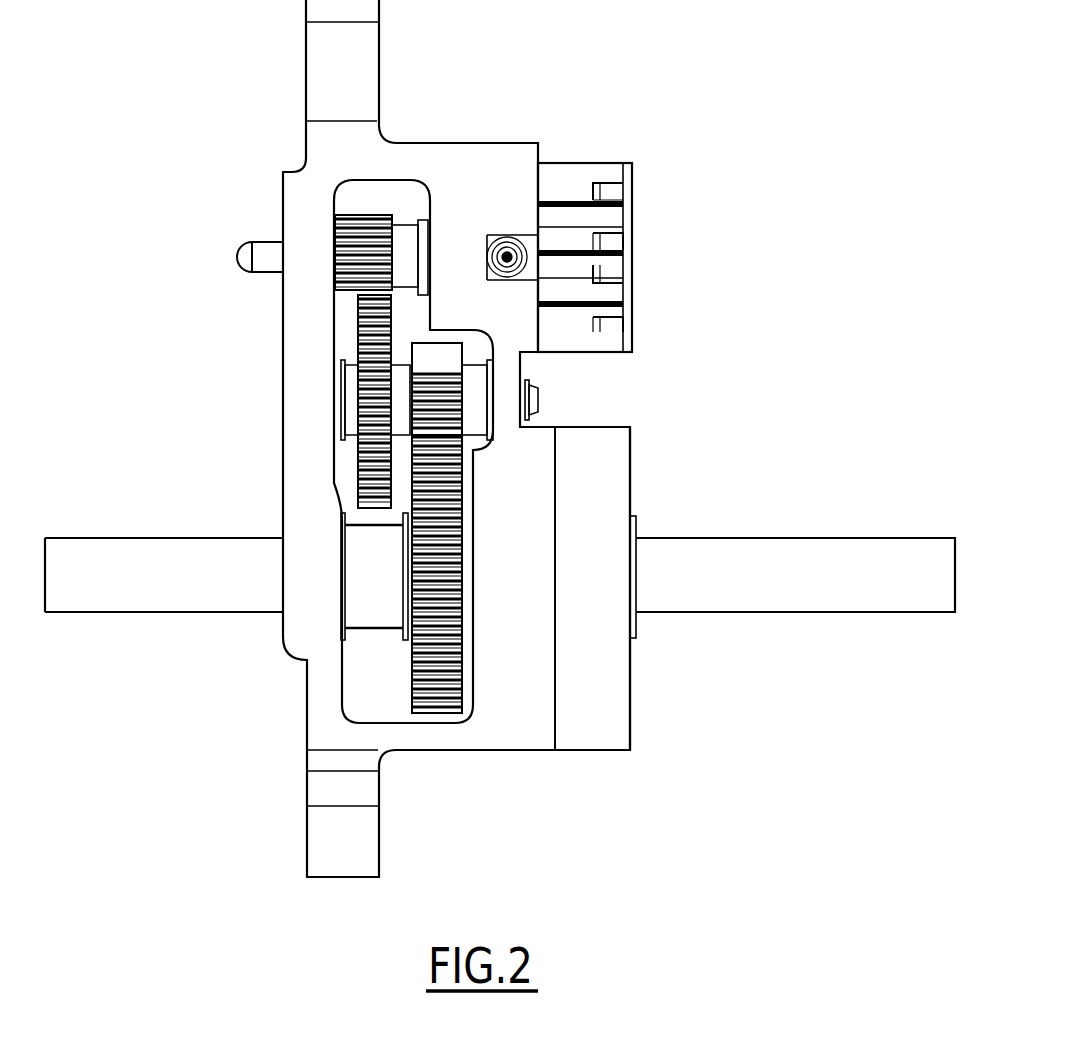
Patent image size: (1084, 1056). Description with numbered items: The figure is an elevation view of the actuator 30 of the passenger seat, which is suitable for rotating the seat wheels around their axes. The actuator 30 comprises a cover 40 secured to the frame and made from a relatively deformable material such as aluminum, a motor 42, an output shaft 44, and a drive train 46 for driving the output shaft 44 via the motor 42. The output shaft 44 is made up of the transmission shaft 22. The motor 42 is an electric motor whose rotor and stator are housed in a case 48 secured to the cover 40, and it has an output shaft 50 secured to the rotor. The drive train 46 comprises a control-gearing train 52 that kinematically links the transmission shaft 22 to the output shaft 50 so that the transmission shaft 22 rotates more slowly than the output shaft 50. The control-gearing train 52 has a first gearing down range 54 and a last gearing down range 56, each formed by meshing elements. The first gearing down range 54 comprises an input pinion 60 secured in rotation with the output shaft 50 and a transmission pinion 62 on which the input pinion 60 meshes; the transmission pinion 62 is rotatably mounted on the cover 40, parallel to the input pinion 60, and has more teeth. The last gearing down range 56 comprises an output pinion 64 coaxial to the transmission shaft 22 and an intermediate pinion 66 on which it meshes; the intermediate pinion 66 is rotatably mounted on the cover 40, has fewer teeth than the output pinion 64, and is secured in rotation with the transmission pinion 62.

The transmission shaft 22 is at (500, 556).
The actuator 30 is at (764, 224).
The cover 40 is at (600, 478).
The motor 42 is at (576, 157).
The output shaft 44 is at (812, 548).
The drive train 46 is at (380, 694).
The case 48 is at (573, 333).
The output shaft 50 is at (262, 262).
The control-gearing train 52 is at (330, 491).
The first gearing down range 54 is at (342, 341).
The last gearing down range 56 is at (472, 460).
The input pinion 60 is at (370, 216).
The transmission pinion 62 is at (364, 458).
The output pinion 64 is at (423, 672).
The intermediate pinion 66 is at (445, 357).